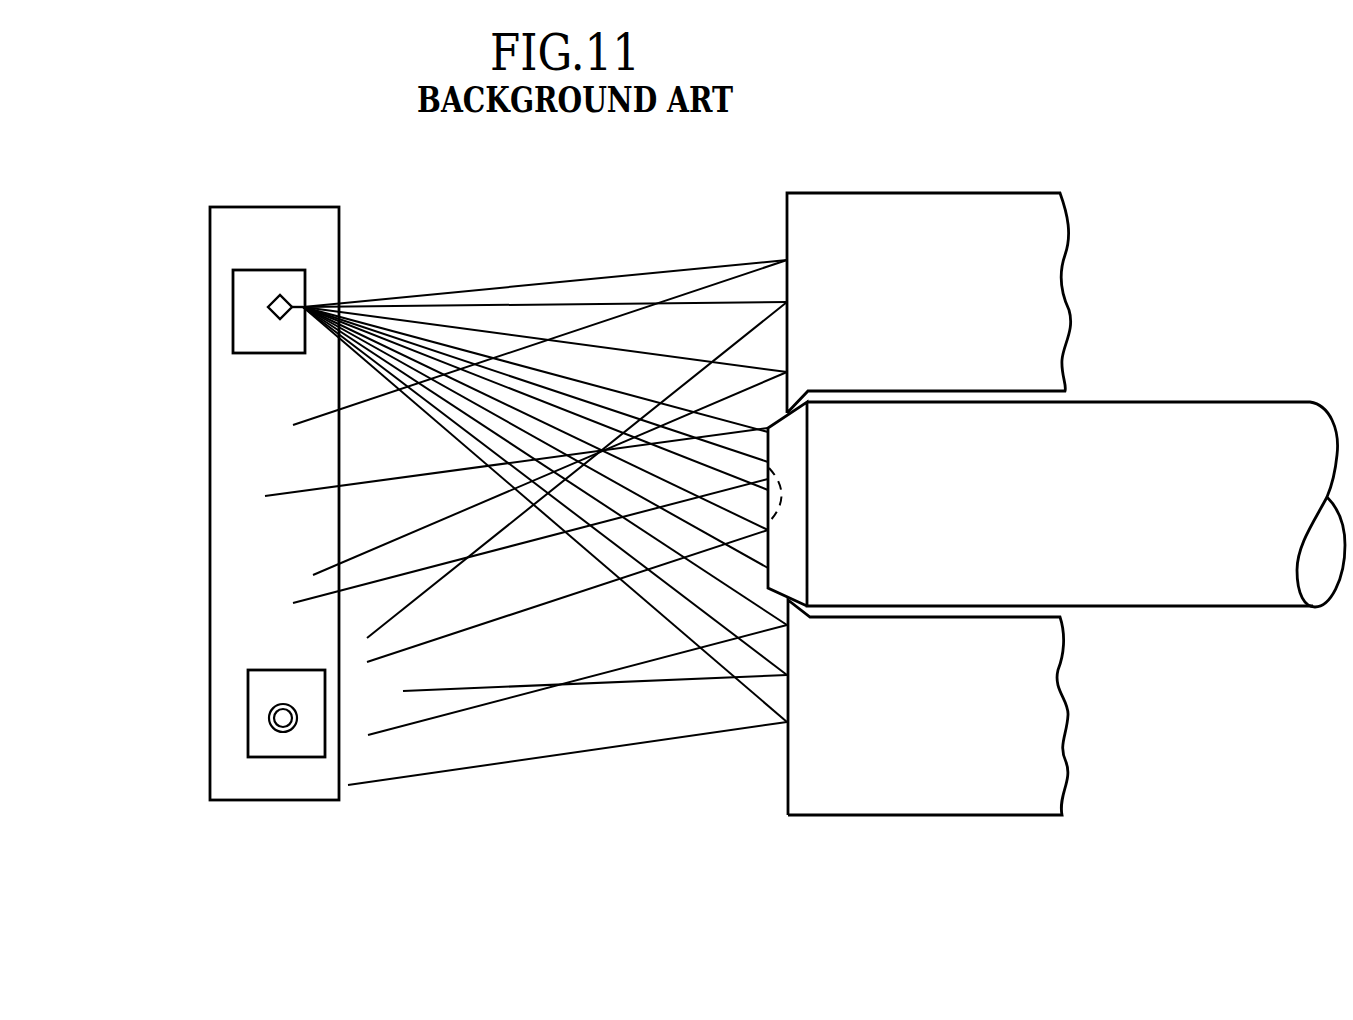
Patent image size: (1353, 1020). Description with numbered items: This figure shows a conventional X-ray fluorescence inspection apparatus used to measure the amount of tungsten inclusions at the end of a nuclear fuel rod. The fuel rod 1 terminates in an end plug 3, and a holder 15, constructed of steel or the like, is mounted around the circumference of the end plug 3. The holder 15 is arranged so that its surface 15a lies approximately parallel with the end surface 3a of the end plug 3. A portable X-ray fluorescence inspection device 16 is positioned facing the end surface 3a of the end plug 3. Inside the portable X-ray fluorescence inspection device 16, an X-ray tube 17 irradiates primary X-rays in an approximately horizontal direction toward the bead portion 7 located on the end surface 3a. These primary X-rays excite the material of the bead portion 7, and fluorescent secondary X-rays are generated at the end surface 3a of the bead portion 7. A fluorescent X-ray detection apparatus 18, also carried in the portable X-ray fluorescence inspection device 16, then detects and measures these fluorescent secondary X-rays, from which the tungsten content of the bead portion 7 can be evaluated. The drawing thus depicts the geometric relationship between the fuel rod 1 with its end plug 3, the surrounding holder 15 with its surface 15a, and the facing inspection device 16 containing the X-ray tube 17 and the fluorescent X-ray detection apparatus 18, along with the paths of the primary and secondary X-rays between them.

The fuel rod 1 is at (1232, 402).
The end plug 3 is at (767, 423).
The end surface 3a is at (768, 555).
The bead portion 7 is at (794, 478).
The holder 15 is at (948, 815).
The surface of the holder 15a is at (787, 225).
The portable X-ray fluorescence inspection device 16 is at (210, 525).
The X-ray tube 17 is at (233, 307).
The fluorescent X-ray detection apparatus 18 is at (248, 727).